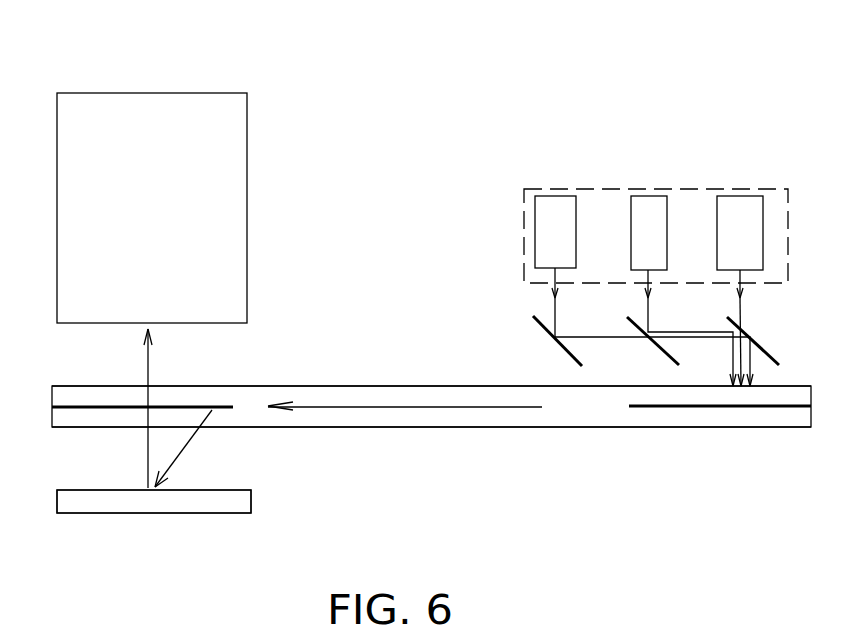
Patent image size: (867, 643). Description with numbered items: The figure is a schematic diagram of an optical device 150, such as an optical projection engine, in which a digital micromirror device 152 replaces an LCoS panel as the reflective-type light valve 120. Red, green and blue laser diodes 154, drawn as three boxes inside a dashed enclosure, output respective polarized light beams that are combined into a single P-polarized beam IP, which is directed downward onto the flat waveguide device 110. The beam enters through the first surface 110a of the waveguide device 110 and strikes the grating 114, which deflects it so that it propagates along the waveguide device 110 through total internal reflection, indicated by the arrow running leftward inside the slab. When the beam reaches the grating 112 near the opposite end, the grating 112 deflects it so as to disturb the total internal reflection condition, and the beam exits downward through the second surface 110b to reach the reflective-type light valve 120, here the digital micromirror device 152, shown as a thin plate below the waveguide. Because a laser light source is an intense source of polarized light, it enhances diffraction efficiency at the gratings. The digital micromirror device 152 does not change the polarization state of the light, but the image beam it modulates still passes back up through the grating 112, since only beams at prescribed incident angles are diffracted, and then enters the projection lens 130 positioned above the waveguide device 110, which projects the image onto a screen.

The optical device 150 is at (77, 31).
The projection lens 130 is at (250, 168).
The reflective-type light valve 120 is at (251, 500).
The digital micromirror device 152 is at (154, 501).
The waveguide device 110 is at (330, 383).
The first surface 110a is at (415, 385).
The second surface 110b is at (462, 428).
The grating 112 is at (190, 405).
The grating 114 is at (652, 407).
The laser diodes 154 is at (653, 188).